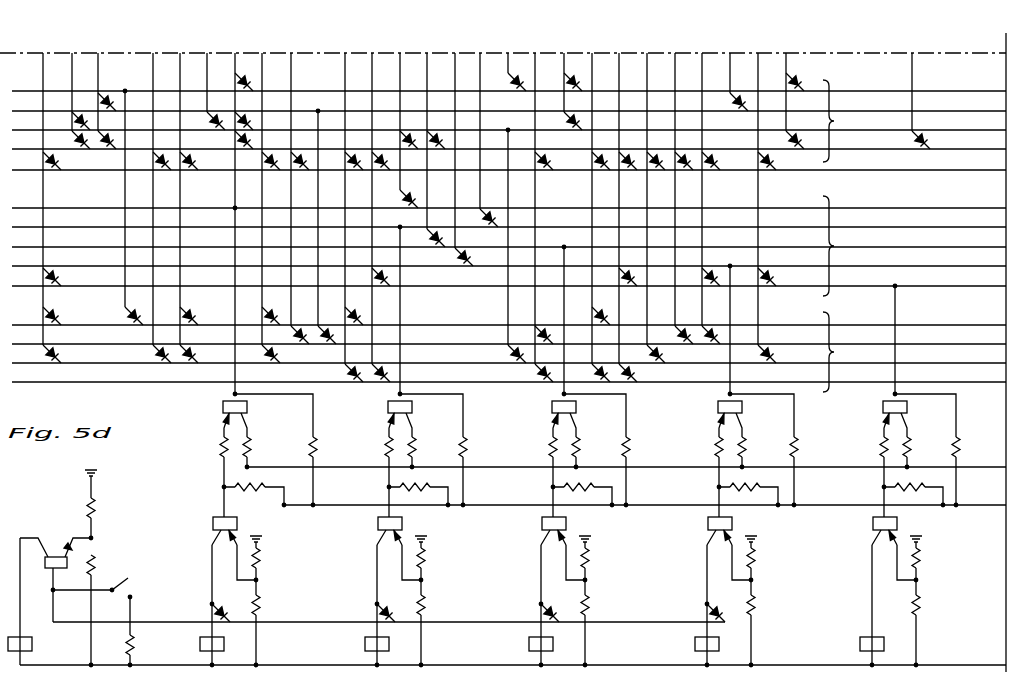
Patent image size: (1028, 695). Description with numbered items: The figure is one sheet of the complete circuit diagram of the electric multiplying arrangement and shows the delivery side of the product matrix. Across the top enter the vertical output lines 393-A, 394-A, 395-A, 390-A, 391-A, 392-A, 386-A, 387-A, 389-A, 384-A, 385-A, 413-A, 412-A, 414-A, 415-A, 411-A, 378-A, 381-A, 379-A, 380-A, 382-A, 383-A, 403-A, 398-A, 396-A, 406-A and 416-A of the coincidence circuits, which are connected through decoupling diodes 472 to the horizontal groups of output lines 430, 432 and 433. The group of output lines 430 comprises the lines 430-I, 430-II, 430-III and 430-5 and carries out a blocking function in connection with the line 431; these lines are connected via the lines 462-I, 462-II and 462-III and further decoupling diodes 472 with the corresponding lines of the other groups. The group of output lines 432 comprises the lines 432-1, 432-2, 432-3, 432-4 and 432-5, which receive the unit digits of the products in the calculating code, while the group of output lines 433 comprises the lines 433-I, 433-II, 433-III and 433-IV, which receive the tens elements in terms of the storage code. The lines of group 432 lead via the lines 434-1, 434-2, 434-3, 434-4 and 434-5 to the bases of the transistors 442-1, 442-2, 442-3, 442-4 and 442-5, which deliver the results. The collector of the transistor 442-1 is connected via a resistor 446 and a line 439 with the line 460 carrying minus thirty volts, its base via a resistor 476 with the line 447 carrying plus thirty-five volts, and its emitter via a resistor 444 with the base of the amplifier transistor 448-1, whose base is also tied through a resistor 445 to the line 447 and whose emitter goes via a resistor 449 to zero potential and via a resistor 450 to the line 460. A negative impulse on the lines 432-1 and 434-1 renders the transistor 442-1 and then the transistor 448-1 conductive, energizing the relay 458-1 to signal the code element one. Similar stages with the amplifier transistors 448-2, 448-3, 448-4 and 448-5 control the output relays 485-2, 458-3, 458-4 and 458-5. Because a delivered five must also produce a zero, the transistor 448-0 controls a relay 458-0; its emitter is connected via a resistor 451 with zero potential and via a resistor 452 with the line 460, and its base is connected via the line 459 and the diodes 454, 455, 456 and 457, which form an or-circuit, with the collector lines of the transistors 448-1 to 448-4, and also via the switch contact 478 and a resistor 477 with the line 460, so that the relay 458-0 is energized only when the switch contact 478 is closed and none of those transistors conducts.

The output line of coincidence circuit 393-A is at (58, 200).
The output line of coincidence circuit 394-A is at (80, 47).
The output line of coincidence circuit 395-A is at (113, 93).
The output line of coincidence circuit 390-A is at (168, 200).
The output line of coincidence circuit 391-A is at (188, 47).
The output line of coincidence circuit 392-A is at (222, 83).
The output line of coincidence circuit 386-A is at (243, 47).
The output line of coincidence circuit 387-A is at (277, 200).
The output line of coincidence circuit 389-A is at (299, 47).
The output line of coincidence circuit 384-A is at (360, 209).
The output line of coincidence circuit 385-A is at (380, 47).
The output line of coincidence circuit 413-A is at (415, 122).
The output line of coincidence circuit 412-A is at (435, 47).
The output line of coincidence circuit 414-A is at (470, 151).
The output line of coincidence circuit 415-A is at (488, 47).
The output line of coincidence circuit 411-A is at (523, 64).
The output line of coincidence circuit 378-A is at (543, 47).
The output line of coincidence circuit 381-A is at (579, 72).
The output line of coincidence circuit 379-A is at (600, 47).
The output line of coincidence circuit 380-A is at (634, 209).
The output line of coincidence circuit 382-A is at (655, 47).
The output line of coincidence circuit 383-A is at (690, 190).
The output line of coincidence circuit 403-A is at (710, 47).
The output line of coincidence circuit 398-A is at (745, 74).
The output line of coincidence circuit 396-A is at (766, 47).
The output line of coincidence circuit 406-A is at (801, 93).
The output line of coincidence circuit 416-A is at (911, 83).
The output line 430-I is at (946, 90).
The output line 430-II is at (946, 110).
The output line 430-III is at (946, 129).
The output line 430-5 is at (946, 148).
The line 431 is at (946, 169).
The group of output lines 430 is at (845, 121).
The output line 432-1 is at (946, 207).
The output line 432-2 is at (946, 226).
The output line 432-3 is at (946, 246).
The output line 432-4 is at (946, 265).
The output line 432-5 is at (946, 285).
The group of output lines 432 is at (845, 246).
The output line 433-I is at (946, 324).
The output line 433-II is at (946, 343).
The output line 433-III is at (946, 362).
The output line 433-IV is at (946, 381).
The group of output lines 433 is at (845, 352).
The decoupling diode 472 is at (80, 143).
The line 462-I is at (124, 191).
The line 462-II is at (311, 174).
The line 462-III is at (507, 176).
The line 434-1 is at (230, 390).
The line 434-2 is at (395, 390).
The line 434-3 is at (559, 390).
The line 434-4 is at (725, 390).
The line 434-5 is at (890, 390).
The transistor 442-1 is at (222, 407).
The transistor 442-2 is at (387, 407).
The transistor 442-3 is at (551, 407).
The transistor 442-4 is at (717, 407).
The transistor 442-5 is at (882, 407).
The resistor 444 is at (218, 447).
The resistor 446 is at (250, 447).
The resistor 476 is at (326, 448).
The resistor 445 is at (255, 499).
The line 439 is at (975, 469).
The line 447 is at (980, 507).
The transistor 448-0 is at (53, 553).
The amplifier transistor 448-1 is at (214, 522).
The amplifier transistor 448-2 is at (379, 522).
The amplifier transistor 448-3 is at (543, 522).
The amplifier transistor 448-4 is at (709, 522).
The amplifier transistor 448-5 is at (874, 522).
The resistor 449 is at (258, 560).
The resistor 450 is at (258, 606).
The resistor 451 is at (96, 515).
The resistor 452 is at (96, 568).
The resistor 477 is at (127, 646).
The switch contact 478 is at (125, 592).
The diode 454 is at (220, 610).
The diode 455 is at (385, 610).
The diode 456 is at (549, 610).
The diode 457 is at (715, 610).
The line 459 is at (148, 621).
The line 460 is at (980, 653).
The relay 458-0 is at (30, 645).
The relay 458-1 is at (200, 645).
The output relay 485-2 is at (347, 645).
The output relay 458-3 is at (529, 645).
The output relay 458-4 is at (695, 645).
The output relay 458-5 is at (860, 645).